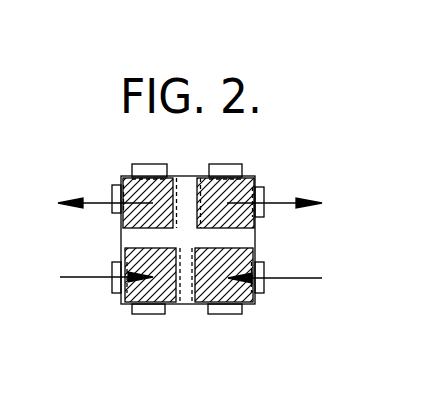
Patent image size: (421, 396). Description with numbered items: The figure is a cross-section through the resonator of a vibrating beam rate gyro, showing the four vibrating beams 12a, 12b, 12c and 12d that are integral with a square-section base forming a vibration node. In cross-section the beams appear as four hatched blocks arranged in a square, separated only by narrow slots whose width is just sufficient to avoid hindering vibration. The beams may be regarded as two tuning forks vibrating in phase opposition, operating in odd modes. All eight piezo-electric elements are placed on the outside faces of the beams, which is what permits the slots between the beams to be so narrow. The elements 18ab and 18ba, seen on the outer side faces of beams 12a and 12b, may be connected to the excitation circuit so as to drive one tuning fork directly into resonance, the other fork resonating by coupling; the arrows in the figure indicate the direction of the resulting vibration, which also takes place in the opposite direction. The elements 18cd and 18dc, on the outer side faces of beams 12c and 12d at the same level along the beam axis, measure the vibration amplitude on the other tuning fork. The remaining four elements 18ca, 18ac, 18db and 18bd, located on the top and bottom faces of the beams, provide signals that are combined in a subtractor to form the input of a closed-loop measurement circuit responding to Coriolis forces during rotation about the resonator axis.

The vibrating beam 12a is at (133, 302).
The vibrating beam 12b is at (238, 296).
The vibrating beam 12c is at (125, 180).
The vibrating beam 12d is at (254, 178).
The piezo-electric element 18ab is at (110, 288).
The piezo-electric element 18ac is at (142, 313).
The piezo-electric element 18ba is at (260, 290).
The piezo-electric element 18bd is at (222, 313).
The piezo-electric element 18ca is at (140, 170).
The piezo-electric element 18cd is at (117, 191).
The piezo-electric element 18db is at (218, 170).
The piezo-electric element 18dc is at (263, 217).